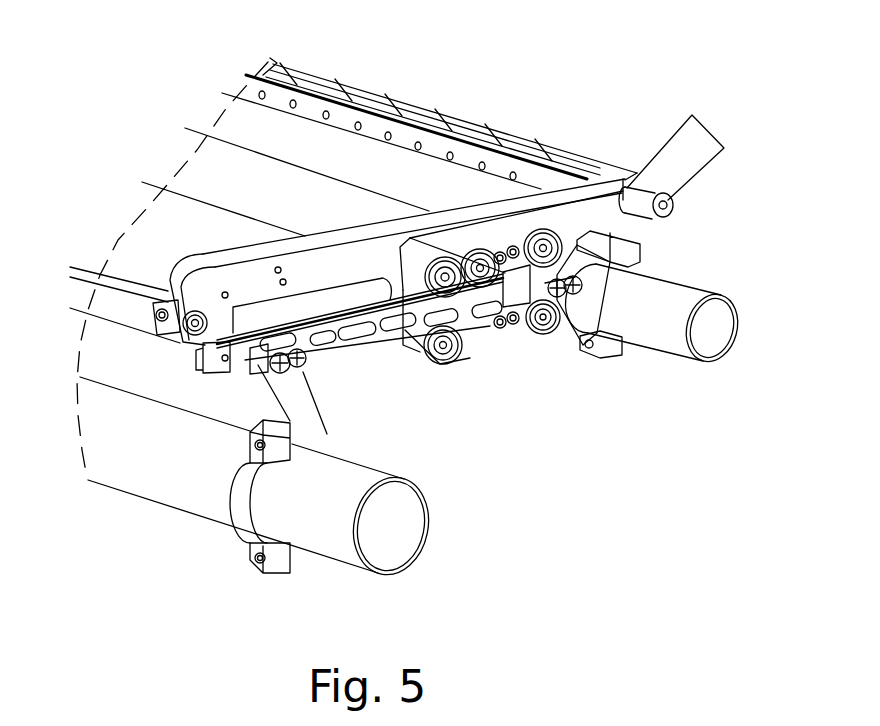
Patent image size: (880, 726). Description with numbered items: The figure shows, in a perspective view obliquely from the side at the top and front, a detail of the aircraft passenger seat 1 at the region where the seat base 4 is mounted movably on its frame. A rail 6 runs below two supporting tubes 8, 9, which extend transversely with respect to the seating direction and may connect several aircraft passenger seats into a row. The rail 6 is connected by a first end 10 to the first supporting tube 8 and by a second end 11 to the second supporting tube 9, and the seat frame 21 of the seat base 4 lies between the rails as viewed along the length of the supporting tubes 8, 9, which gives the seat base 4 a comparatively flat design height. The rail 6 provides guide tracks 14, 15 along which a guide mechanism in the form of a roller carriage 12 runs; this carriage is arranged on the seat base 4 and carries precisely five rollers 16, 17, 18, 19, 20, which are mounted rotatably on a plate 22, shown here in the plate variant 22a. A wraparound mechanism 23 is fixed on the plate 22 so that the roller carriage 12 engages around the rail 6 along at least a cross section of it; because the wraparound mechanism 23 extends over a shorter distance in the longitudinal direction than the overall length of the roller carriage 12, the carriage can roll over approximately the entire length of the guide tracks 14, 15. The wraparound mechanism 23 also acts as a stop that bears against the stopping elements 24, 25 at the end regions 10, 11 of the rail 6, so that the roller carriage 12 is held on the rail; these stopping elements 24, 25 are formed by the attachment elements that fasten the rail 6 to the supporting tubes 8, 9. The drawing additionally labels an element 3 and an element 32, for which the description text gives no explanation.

The aircraft passenger seat 1 is at (208, 548).
The handle 3 is at (737, 106).
The seat base 4 is at (592, 118).
The rail 6 is at (322, 356).
The first supporting tube 8 is at (383, 578).
The second supporting tube 9 is at (733, 347).
The first end 10 is at (178, 363).
The second end 11 is at (648, 252).
The roller carriage 12 is at (480, 356).
The guide track 14 is at (108, 243).
The guide track 15 is at (190, 410).
The roller 16 is at (436, 366).
The roller 17 is at (543, 336).
The roller 18 is at (437, 257).
The roller 19 is at (478, 249).
The roller 20 is at (533, 229).
The seat frame 21 is at (358, 82).
The plate 22 is at (457, 360).
The plate variant 22a is at (505, 330).
The wraparound mechanism 23 is at (556, 231).
The stopping element 24 is at (574, 347).
The stopping element 25 is at (312, 374).
The pivot cylinder 32 is at (673, 204).